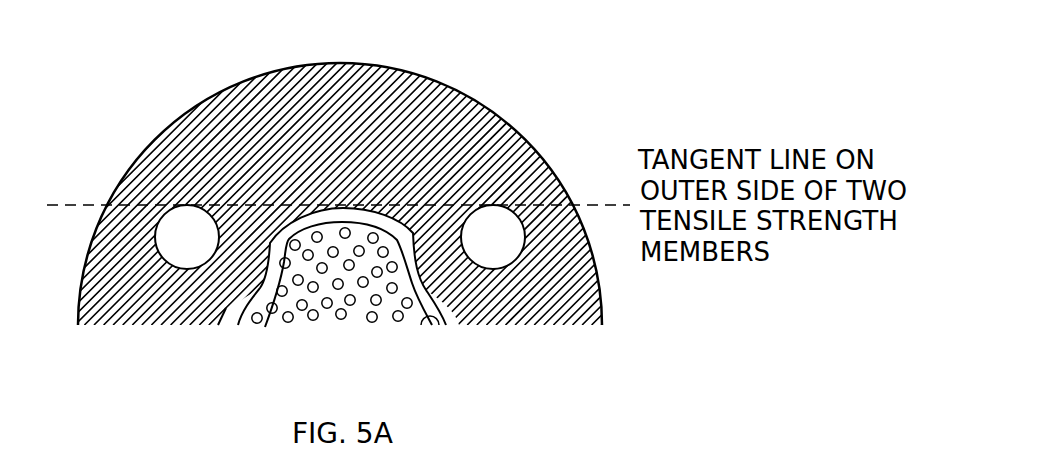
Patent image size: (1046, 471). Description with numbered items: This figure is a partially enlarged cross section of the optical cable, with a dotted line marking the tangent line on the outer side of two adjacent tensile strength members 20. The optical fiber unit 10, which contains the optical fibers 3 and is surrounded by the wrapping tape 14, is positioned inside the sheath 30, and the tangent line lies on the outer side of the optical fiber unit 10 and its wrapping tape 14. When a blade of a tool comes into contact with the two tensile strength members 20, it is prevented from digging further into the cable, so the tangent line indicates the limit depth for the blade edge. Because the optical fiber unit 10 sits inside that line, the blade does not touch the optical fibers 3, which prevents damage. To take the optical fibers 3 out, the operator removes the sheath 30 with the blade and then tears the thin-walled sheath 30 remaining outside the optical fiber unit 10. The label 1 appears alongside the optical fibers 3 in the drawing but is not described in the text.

The sheath 30 is at (467, 120).
The tensile strength member 20 is at (173, 242).
The wrapping tape 14 is at (418, 273).
The cable core 10 is at (418, 301).
The optical fiber 3 is at (301, 309).
The optical fiber unit 1 is at (334, 311).